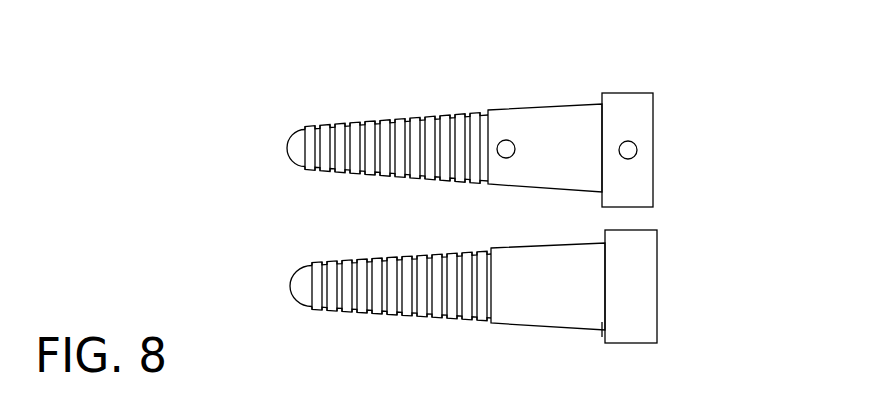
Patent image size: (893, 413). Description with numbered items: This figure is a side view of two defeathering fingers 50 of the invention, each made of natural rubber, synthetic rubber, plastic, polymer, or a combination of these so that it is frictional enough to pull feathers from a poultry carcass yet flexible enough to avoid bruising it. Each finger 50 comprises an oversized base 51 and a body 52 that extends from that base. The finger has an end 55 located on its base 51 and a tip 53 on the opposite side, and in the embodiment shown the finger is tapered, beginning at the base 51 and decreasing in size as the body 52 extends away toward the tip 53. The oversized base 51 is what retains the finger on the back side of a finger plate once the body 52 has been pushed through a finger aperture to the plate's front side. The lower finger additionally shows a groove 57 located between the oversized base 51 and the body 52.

The finger 50 is at (547, 118).
The oversized base 51 is at (627, 103).
The body 52 is at (387, 122).
The tip 53 is at (299, 128).
The end 55 is at (655, 129).
The groove 57 is at (602, 337).